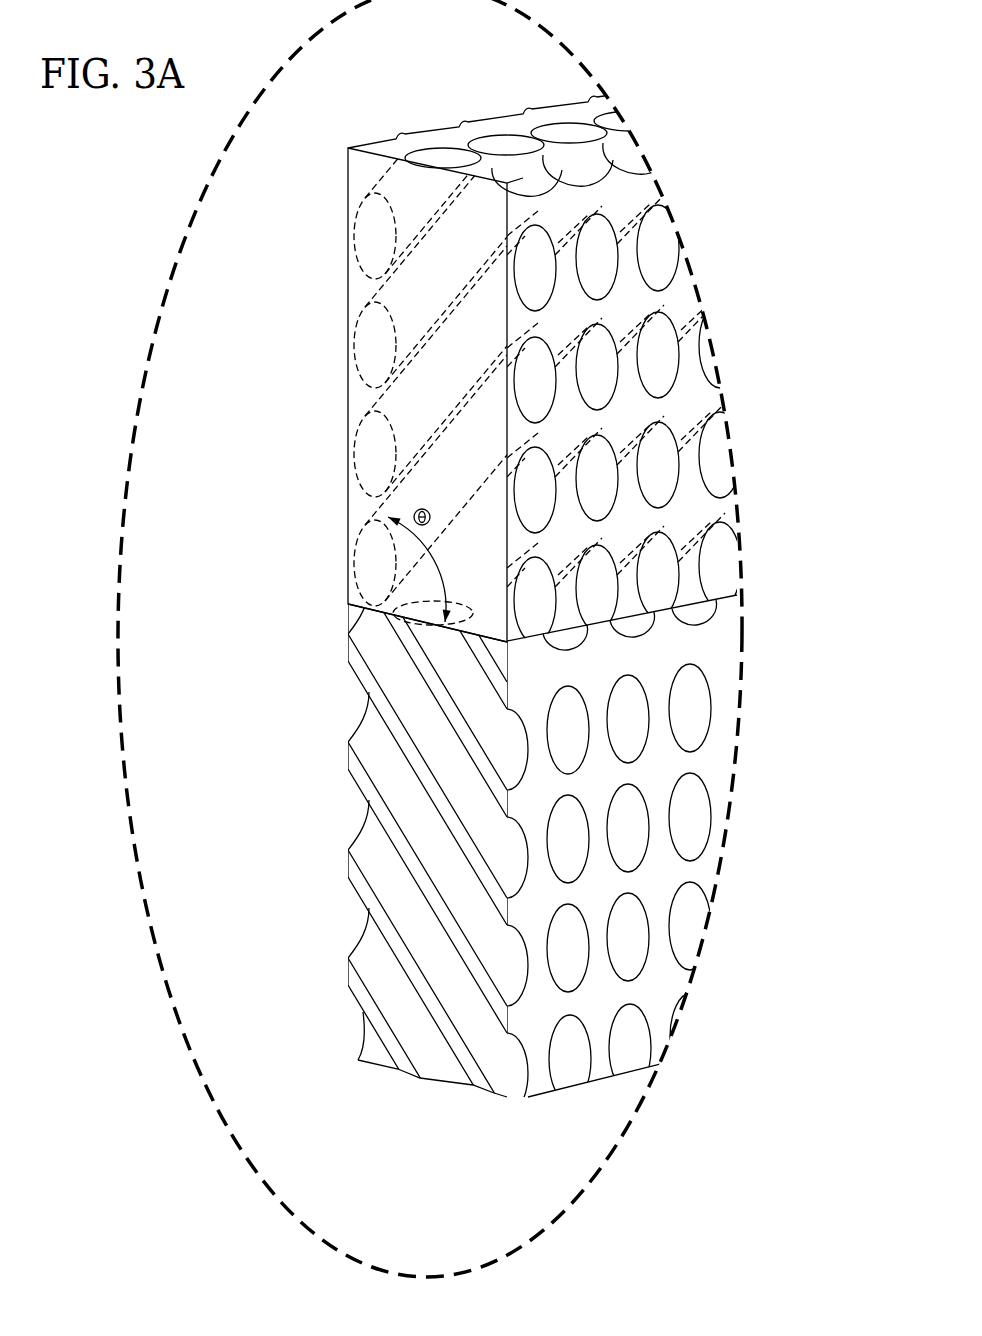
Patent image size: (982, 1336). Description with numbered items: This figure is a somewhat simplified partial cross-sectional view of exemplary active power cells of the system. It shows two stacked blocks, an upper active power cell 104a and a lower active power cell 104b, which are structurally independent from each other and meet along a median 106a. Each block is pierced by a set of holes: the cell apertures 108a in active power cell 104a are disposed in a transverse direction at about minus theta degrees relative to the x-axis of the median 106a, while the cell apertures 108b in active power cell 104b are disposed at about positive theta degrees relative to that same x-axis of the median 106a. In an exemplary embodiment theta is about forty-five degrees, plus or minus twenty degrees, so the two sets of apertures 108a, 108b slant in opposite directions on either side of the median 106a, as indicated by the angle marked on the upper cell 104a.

The active power cell 104a is at (397, 130).
The active power cell 104b is at (541, 1106).
The median 106a is at (364, 614).
The cell apertures 108a is at (683, 267).
The cell apertures 108b is at (672, 733).